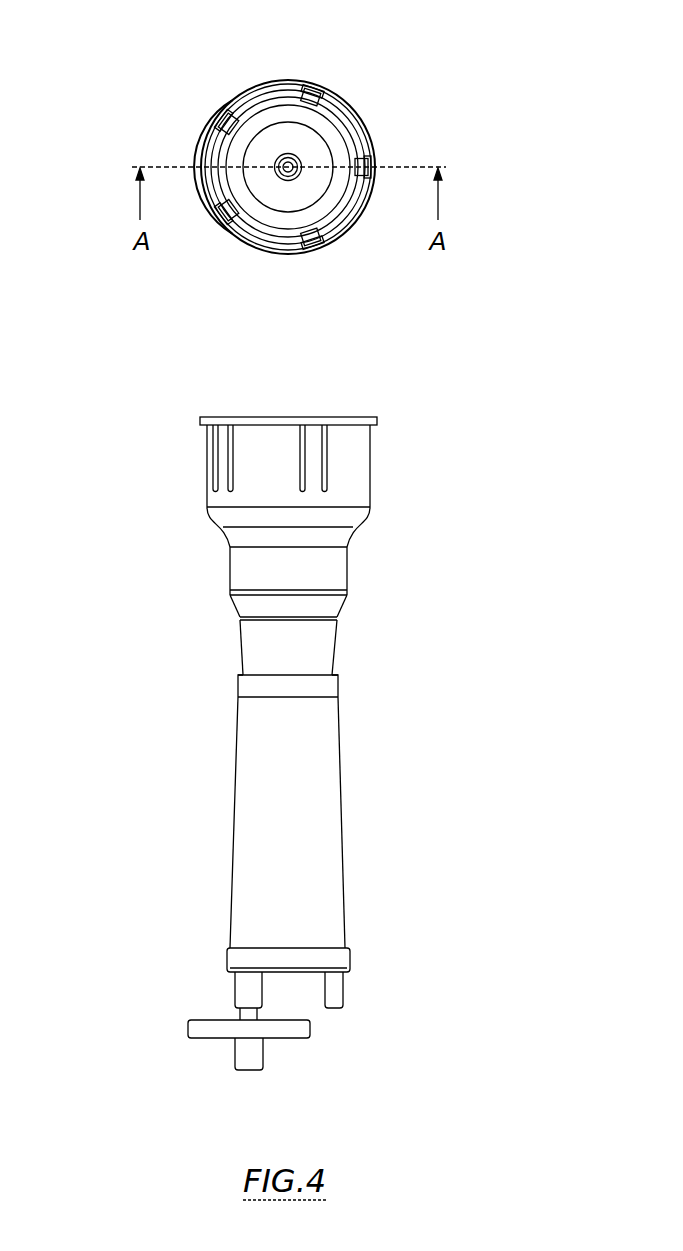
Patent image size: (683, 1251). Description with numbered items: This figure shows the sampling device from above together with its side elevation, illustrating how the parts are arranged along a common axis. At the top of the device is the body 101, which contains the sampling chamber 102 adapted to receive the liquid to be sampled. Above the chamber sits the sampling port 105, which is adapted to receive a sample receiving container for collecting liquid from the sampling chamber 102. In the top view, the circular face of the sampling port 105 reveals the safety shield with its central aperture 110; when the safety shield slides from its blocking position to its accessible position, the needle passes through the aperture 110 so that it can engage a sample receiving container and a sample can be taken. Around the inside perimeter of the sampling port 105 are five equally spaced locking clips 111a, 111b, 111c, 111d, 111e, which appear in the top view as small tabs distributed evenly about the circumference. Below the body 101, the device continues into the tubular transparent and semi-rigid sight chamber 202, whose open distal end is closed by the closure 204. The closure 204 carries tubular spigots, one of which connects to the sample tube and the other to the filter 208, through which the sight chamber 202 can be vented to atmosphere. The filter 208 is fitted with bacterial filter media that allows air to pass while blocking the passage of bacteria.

The aperture 110 is at (293, 177).
The locking clip 111a is at (314, 92).
The locking clip 111b is at (368, 162).
The locking clip 111c is at (316, 246).
The locking clip 111d is at (224, 214).
The locking clip 111e is at (224, 120).
The sampling port 105 is at (365, 463).
The body 101 is at (340, 563).
The sampling chamber 102 is at (330, 652).
The sight chamber 202 is at (340, 820).
The closure 204 is at (352, 960).
The filter 208 is at (192, 1030).